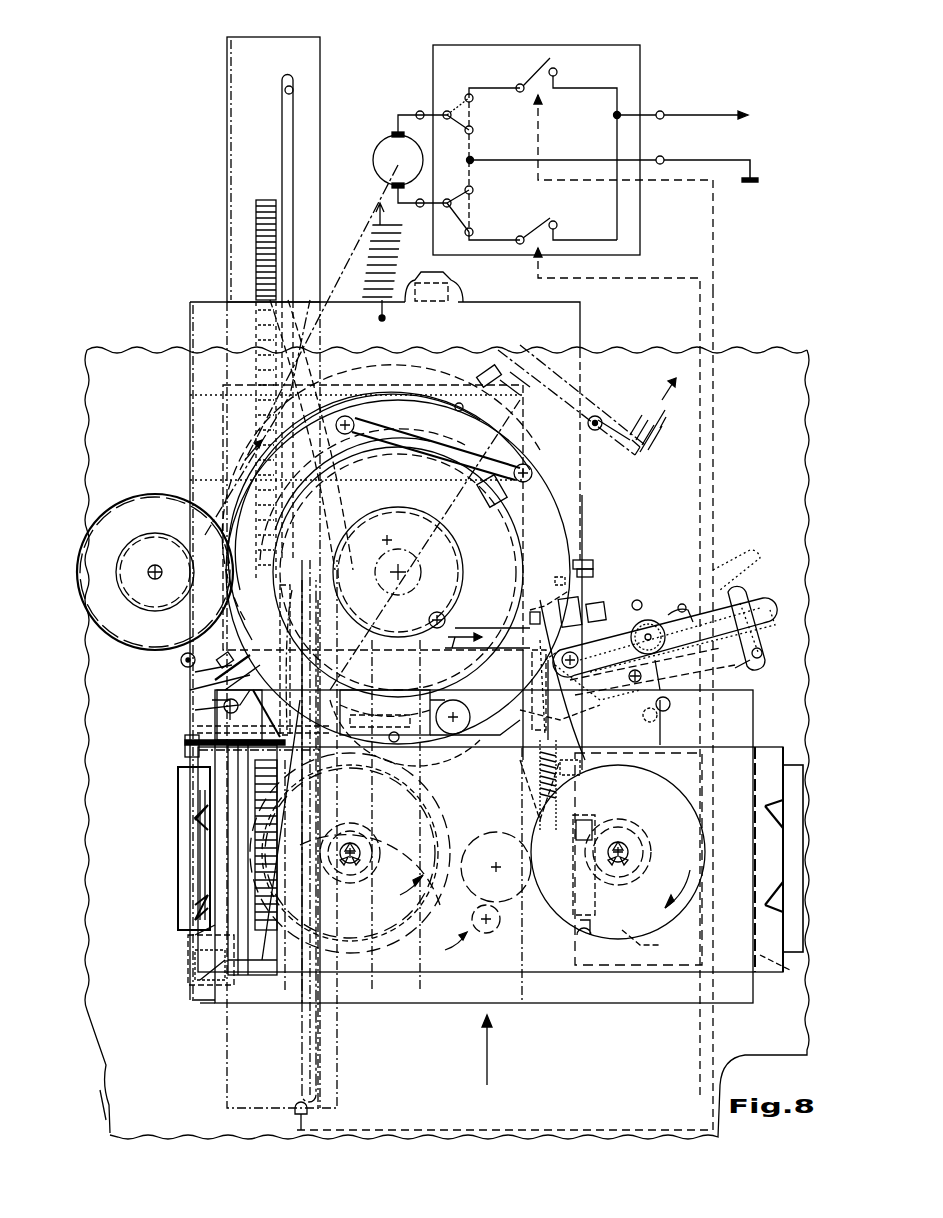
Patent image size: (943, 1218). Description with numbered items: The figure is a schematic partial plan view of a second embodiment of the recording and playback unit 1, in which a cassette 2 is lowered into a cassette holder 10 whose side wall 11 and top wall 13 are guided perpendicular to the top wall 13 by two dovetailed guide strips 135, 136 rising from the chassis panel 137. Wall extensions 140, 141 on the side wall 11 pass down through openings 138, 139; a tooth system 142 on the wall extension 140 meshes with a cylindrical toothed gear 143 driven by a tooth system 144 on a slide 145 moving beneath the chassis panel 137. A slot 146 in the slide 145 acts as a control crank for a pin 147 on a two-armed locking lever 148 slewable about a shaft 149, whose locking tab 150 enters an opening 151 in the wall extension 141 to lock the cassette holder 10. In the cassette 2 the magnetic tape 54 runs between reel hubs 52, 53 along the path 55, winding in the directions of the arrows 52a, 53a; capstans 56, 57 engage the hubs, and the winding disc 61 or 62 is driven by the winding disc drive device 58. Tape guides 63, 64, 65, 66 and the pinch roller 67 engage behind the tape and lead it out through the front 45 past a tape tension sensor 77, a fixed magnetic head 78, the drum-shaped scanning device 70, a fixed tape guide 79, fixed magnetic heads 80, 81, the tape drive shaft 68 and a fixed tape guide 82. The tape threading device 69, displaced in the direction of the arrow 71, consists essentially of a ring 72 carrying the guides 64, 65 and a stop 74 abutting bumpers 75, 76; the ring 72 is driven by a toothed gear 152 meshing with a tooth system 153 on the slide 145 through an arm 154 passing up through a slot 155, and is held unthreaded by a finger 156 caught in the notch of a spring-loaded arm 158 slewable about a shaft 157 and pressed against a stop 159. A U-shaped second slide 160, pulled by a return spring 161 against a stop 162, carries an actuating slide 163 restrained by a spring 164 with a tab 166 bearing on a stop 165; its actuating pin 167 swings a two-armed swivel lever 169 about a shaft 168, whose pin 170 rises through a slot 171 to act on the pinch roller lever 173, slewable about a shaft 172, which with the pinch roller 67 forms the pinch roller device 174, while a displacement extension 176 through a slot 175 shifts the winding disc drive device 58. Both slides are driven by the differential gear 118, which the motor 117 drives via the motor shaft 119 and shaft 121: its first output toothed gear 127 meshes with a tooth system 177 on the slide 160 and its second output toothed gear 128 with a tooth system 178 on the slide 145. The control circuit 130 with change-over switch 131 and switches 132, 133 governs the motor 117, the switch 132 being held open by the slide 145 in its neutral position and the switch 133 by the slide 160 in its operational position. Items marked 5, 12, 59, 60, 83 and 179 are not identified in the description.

The recording and playback unit 1 is at (100, 1090).
The cassette 2 is at (607, 1005).
The cassette insertion direction 5 is at (487, 1058).
The cassette holder 10 is at (768, 985).
The side wall 11 is at (198, 863).
The cassette side wall 12 is at (795, 964).
The top wall 13 is at (530, 1003).
The front 45 is at (398, 690).
The reel hub 52 is at (358, 873).
The arrow 52a is at (400, 890).
The reel hub 53 is at (628, 873).
The arrow 53a is at (682, 885).
The magnetic tape 54 is at (661, 759).
The dot-dash line 55 is at (362, 690).
The capstan 56 is at (363, 845).
The capstan 57 is at (625, 832).
The winding disc drive device 58 is at (443, 960).
The guide roller 59 is at (500, 925).
The capstan 60 is at (485, 832).
The winding disc 61 is at (428, 797).
The winding disc 62 is at (652, 944).
The tape guide 63 is at (180, 660).
The tape guide 64 is at (531, 468).
The tape guide 65 is at (345, 415).
The tape guide 66 is at (682, 602).
The pinch roller 67 is at (649, 623).
The tape drive shaft 68 is at (637, 599).
The tape threading device 69 is at (562, 487).
The drum-shaped scanning device 70 is at (474, 522).
The arrow 71 is at (245, 454).
The ring 72 is at (235, 480).
The stop 74 is at (584, 559).
The bumper 75 is at (195, 674).
The bumper 76 is at (593, 565).
The tape tension sensor 77 is at (210, 680).
The fixed magnetic head 78 is at (493, 502).
The fixed tape guide 79 is at (446, 620).
The fixed magnetic head 80 is at (578, 599).
The fixed magnetic head 81 is at (606, 609).
The fixed tape guide 82 is at (666, 690).
The direction arrow 83 is at (455, 642).
The motor 117 is at (388, 147).
The differential gear 118 is at (128, 495).
The motor shaft 119 is at (360, 216).
The shaft 121 is at (155, 582).
The first output toothed gear 127 is at (135, 556).
The second output toothed gear 128 is at (145, 502).
The control circuit 130 is at (648, 88).
The bipolar change-over switch 131 is at (474, 115).
The unipolar switch 132 is at (535, 68).
The unipolar switch 133 is at (542, 228).
The dovetailed guide strip 135 is at (195, 818).
The dovetailed guide strip 136 is at (773, 823).
The chassis panel 137 is at (775, 340).
The opening 138 is at (178, 770).
The opening 139 is at (208, 1002).
The wall extension 140 is at (185, 752).
The wall extension 141 is at (195, 918).
The tooth system 142 is at (198, 725).
The cylindrical toothed gear 143 is at (185, 742).
The tooth system 144 is at (255, 224).
The slide 145 is at (273, 43).
The slot 146 is at (295, 84).
The pin 147 is at (320, 626).
The two-armed locking lever 148 is at (273, 972).
The shaft 149 is at (315, 777).
The locking tab 150 is at (198, 952).
The opening 151 is at (193, 979).
The toothed gear 152 is at (350, 525).
The tooth system 153 is at (330, 374).
The arm 154 is at (407, 480).
The slot 155 is at (393, 415).
The finger 156 is at (198, 701).
The shaft 157 is at (600, 418).
The arm 158 is at (540, 384).
The stop 159 is at (483, 366).
The second slide 160 is at (580, 322).
The return spring 161 is at (372, 265).
The stop 162 is at (448, 295).
The actuating slide 163 is at (530, 665).
The spring 164 is at (528, 783).
The stop 165 is at (529, 620).
The tab 166 is at (560, 600).
The actuating pin 167 is at (525, 650).
The shaft 168 is at (633, 687).
The two-armed swivel lever 169 is at (735, 670).
The pin 170 is at (760, 656).
The slot 171 is at (754, 629).
The shaft 172 is at (575, 705).
The pinch roller lever 173 is at (748, 598).
The pinch roller device 174 is at (715, 575).
The slot 175 is at (584, 893).
The displacement extension 176 is at (612, 827).
The tooth system 177 is at (190, 324).
The tooth system 178 is at (227, 144).
The spring 179 is at (580, 752).